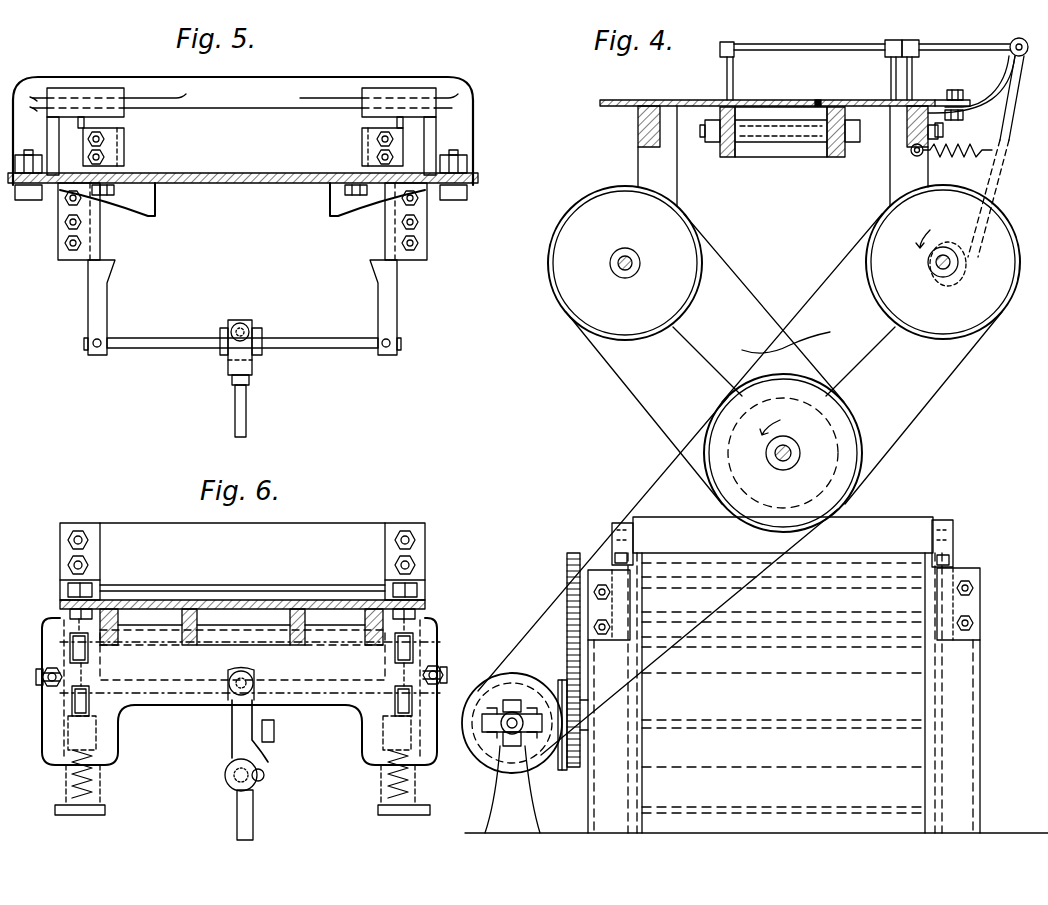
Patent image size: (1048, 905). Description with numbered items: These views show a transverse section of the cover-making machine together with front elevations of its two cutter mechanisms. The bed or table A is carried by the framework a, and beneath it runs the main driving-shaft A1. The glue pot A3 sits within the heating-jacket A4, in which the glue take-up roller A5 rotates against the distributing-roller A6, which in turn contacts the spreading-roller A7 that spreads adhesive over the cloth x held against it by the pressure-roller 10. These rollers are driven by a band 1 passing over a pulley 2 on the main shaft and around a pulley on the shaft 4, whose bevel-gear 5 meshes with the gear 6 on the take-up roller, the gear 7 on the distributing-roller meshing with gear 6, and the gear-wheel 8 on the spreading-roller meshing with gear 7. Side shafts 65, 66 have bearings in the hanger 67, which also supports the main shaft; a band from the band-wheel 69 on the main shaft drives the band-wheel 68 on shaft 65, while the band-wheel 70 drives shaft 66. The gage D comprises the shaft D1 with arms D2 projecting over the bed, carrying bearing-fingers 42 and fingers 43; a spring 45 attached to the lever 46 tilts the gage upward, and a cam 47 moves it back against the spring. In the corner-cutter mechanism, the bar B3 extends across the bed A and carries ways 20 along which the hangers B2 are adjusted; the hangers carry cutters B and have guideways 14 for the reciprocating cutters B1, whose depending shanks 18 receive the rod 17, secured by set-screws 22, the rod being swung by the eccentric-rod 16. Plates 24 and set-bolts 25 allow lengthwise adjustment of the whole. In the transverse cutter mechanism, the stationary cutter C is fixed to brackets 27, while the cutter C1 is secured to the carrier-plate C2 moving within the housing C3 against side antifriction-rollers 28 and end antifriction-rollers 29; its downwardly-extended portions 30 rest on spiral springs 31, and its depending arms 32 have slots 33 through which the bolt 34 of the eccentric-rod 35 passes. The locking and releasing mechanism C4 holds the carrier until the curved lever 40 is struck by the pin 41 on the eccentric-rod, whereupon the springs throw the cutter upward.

In FIG. 5, the laterally-projecting ribs or ways 20 is at (170, 106).
In FIG. 5, the cutters B is at (126, 147).
In FIG. 5, the cutters B1 is at (118, 242).
In FIG. 5, the hangers B2 is at (60, 181).
In FIG. 5, the bar B3 is at (296, 79).
In FIG. 5, the bed or table A is at (255, 178).
In FIG. 6, the bed or table A is at (322, 598).
In FIG. 4, the bed or table A is at (608, 100).
In FIG. 5, the longitudinally-slotted plates 24 is at (472, 176).
In FIG. 5, the set-bolts 25 is at (470, 194).
In FIG. 5, the guideways 14 is at (104, 255).
In FIG. 5, the depending shanks 18 is at (108, 310).
In FIG. 5, the rod 17 is at (242, 347).
In FIG. 5, the set-screws 22 is at (96, 350).
In FIG. 5, the eccentric-rod 16 is at (247, 402).
In FIG. 6, the brackets 27 is at (428, 550).
In FIG. 6, the cutter C is at (222, 594).
In FIG. 6, the blade or cutter C1 is at (241, 627).
In FIG. 6, the carrier-plate C2 is at (272, 646).
In FIG. 6, the housing C3 is at (120, 725).
In FIG. 6, the locking and releasing mechanism C4 is at (279, 730).
In FIG. 6, the side antifriction-rollers 28 is at (66, 655).
In FIG. 6, the end antifriction-rollers 29 is at (45, 684).
In FIG. 6, the downwardly-extended portions 30 is at (98, 744).
In FIG. 6, the spiral springs 31 is at (96, 786).
In FIG. 6, the depending arms 32 is at (224, 712).
In FIG. 6, the vertical slots 33 is at (236, 760).
In FIG. 6, the bolt 34 is at (256, 792).
In FIG. 6, the eccentric-rod 35 is at (237, 822).
In FIG. 6, the curved lever 40 is at (258, 750).
In FIG. 6, the pin 41 is at (264, 776).
In FIG. 4, the gage D is at (865, 41).
In FIG. 4, the shaft D1 is at (1010, 40).
In FIG. 4, the arms D2 is at (970, 50).
In FIG. 4, the fingers 43 is at (733, 75).
In FIG. 4, the bearing-fingers 42 is at (912, 82).
In FIG. 4, the cloth or material x is at (816, 100).
In FIG. 4, the framework a is at (677, 170).
In FIG. 4, the lever 46 is at (1000, 122).
In FIG. 4, the spring 45 is at (975, 160).
In FIG. 4, the cam 47 is at (960, 278).
In FIG. 4, the band-wheel 70 is at (602, 258).
In FIG. 4, the side shaft 66 is at (640, 262).
In FIG. 4, the side shaft 65 is at (958, 262).
In FIG. 4, the band-wheel 68 is at (948, 272).
In FIG. 4, the hanger 67 is at (816, 328).
In FIG. 4, the band-wheel 69 is at (846, 430).
In FIG. 4, the pulley 2 is at (735, 460).
In FIG. 4, the main driving-shaft A1 is at (800, 455).
In FIG. 4, the pressure-roller 10 is at (782, 542).
In FIG. 4, the band 1 is at (540, 606).
In FIG. 4, the gear-wheel 8 is at (566, 560).
In FIG. 4, the gear 7 is at (566, 630).
In FIG. 4, the bevel-gear 5 is at (524, 676).
In FIG. 4, the gear 6 is at (560, 682).
In FIG. 4, the shaft 4 is at (512, 734).
In FIG. 4, the spreading-roller A7 is at (640, 606).
In FIG. 4, the distributing-roller A6 is at (718, 673).
In FIG. 4, the glue take-up roller A5 is at (724, 766).
In FIG. 4, the glue pot or pan A3 is at (698, 806).
In FIG. 4, the heating-jacket A4 is at (588, 794).